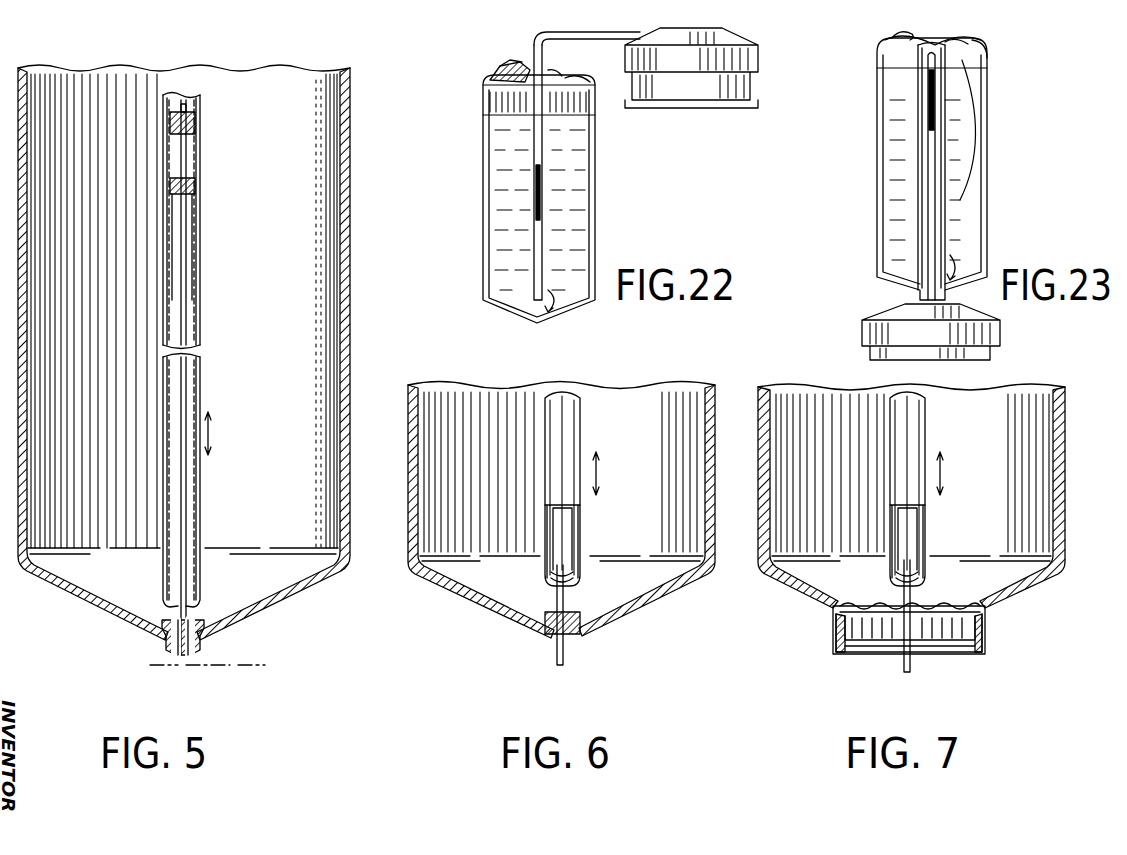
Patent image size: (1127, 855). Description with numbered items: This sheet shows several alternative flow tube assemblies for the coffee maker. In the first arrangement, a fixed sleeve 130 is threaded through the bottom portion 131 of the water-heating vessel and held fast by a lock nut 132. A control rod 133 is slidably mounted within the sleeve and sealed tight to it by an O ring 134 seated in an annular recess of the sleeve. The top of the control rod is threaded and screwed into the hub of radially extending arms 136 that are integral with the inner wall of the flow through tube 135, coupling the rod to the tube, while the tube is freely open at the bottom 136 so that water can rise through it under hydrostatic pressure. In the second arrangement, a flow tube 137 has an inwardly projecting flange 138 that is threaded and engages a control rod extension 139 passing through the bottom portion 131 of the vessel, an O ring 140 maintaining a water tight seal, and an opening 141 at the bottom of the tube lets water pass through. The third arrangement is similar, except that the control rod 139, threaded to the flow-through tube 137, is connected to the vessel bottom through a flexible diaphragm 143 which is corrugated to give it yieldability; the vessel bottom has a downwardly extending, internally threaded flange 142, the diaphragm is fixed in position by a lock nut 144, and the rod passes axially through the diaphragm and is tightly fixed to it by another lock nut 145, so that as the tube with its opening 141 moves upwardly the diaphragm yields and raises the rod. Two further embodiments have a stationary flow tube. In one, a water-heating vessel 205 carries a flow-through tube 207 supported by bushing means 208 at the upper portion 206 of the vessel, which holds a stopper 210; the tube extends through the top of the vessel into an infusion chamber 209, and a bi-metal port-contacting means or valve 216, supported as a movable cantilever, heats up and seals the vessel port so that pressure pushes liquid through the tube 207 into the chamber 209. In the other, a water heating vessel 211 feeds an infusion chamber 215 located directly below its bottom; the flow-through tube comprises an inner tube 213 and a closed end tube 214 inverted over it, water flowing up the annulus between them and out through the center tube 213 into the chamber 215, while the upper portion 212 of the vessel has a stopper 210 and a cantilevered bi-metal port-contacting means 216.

In FIG. 5, the fixed sleeve 130 is at (187, 258).
In FIG. 5, the bottom portion of the water-heating vessel 131 is at (278, 584).
In FIG. 6, the bottom portion of the water-heating vessel 131 is at (656, 593).
In FIG. 7, the bottom portion of the water-heating vessel 131 is at (911, 496).
In FIG. 5, the lock nut 132 is at (192, 650).
In FIG. 5, the control rod 133 is at (184, 156).
In FIG. 5, the O ring 134 is at (192, 190).
In FIG. 5, the flow through tube 135 is at (197, 232).
In FIG. 5, the radially extending arms 136 is at (186, 128).
In FIG. 6, the flow tube 137 is at (581, 424).
In FIG. 7, the flow tube 137 is at (926, 424).
In FIG. 6, the inwardly projecting flange 138 is at (574, 560).
In FIG. 6, the control rod extension 139 is at (556, 650).
In FIG. 7, the control rod extension 139 is at (900, 648).
In FIG. 6, the O ring 140 is at (586, 626).
In FIG. 6, the opening 141 is at (580, 580).
In FIG. 7, the opening 141 is at (925, 580).
In FIG. 7, the downwardly extending flange 142 is at (986, 644).
In FIG. 7, the diaphragm 143 is at (962, 604).
In FIG. 7, the lock nut 144 is at (983, 620).
In FIG. 7, the lock nut 145 is at (898, 606).
In FIG. 22, the water-heating vessel 205 is at (598, 210).
In FIG. 22, the upper portion of the vessel 206 is at (488, 80).
In FIG. 22, the flow-through tube 207 is at (545, 188).
In FIG. 22, the bushing means 208 is at (552, 76).
In FIG. 22, the infusion chamber 209 is at (760, 52).
In FIG. 22, the stopper 210 is at (500, 66).
In FIG. 23, the stopper 210 is at (897, 32).
In FIG. 23, the water heating vessel 211 is at (988, 142).
In FIG. 23, the upper portion of the vessel 212 is at (988, 52).
In FIG. 23, the inner tube 213 is at (940, 222).
In FIG. 23, the closed end tube 214 is at (947, 242).
In FIG. 23, the infusion chamber 215 is at (1002, 332).
In FIG. 22, the bi-metal port-contacting means 216 is at (596, 82).
In FIG. 23, the bi-metal port-contacting means 216 is at (970, 40).